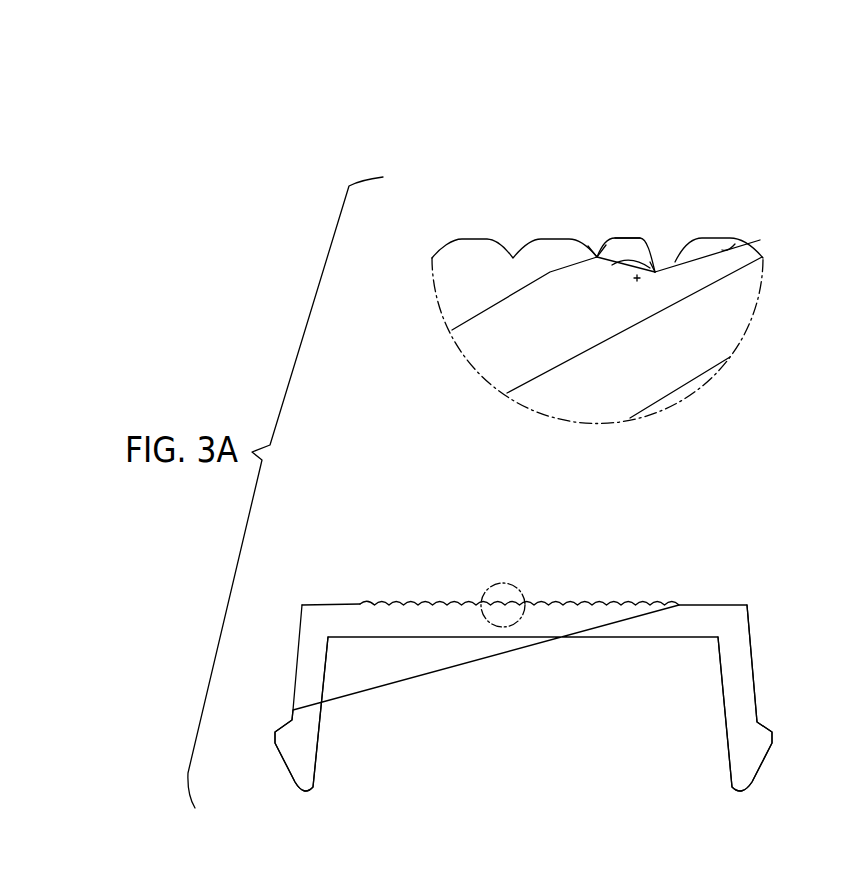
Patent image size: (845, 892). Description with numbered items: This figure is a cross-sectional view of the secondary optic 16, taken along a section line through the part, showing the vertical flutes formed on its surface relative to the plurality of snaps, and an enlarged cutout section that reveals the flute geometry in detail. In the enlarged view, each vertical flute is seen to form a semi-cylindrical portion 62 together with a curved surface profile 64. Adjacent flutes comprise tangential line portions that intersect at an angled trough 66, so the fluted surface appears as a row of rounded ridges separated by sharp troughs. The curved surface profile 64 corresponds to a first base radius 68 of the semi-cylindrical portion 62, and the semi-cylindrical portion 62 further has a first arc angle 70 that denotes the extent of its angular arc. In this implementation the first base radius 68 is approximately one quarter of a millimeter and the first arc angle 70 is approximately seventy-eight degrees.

The secondary optic 16 is at (700, 561).
The semi-cylindrical portion 62 is at (760, 240).
The curved surface profile 64 is at (645, 238).
The angled trough 66 is at (597, 255).
The first base radius 68 is at (655, 272).
The first arc angle 70 is at (612, 266).